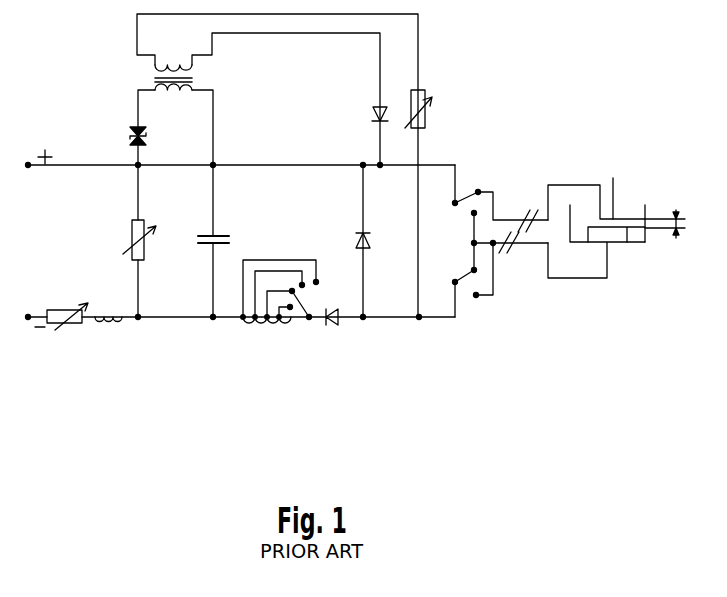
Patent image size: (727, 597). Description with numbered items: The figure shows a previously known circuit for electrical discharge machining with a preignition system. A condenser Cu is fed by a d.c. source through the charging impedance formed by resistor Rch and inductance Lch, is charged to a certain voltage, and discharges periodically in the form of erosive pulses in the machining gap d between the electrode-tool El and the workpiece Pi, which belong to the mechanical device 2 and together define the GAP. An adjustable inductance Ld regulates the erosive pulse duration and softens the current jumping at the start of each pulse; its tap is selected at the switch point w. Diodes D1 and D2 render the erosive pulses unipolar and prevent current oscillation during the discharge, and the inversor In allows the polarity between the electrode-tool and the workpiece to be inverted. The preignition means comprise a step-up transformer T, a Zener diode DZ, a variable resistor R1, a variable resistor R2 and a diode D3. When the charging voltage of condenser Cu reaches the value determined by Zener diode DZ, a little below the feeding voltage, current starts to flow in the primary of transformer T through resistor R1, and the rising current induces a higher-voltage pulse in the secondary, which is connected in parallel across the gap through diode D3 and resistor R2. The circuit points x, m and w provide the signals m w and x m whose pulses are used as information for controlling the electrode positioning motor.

The step up transformer T is at (162, 77).
The Zener diode DZ is at (155, 138).
The variable resistor R1 is at (127, 240).
The condenser Cu is at (232, 231).
The charging impedance (resistor) Rch is at (62, 337).
The charging impedance (inductance) Lch is at (103, 344).
The adjustable inductance Ld is at (280, 317).
The node w is at (304, 313).
The diode D2 is at (336, 342).
The node m is at (366, 326).
The diode D1 is at (379, 242).
The node x is at (368, 175).
The diode D3 is at (364, 125).
The variable resistor R2 is at (435, 109).
The inversor In is at (501, 239).
The machining gap GAP is at (604, 226).
The electrode-tool El is at (613, 196).
The mechanical device 2 is at (645, 210).
The workpiece Pi is at (617, 236).
The machining gap d is at (671, 224).